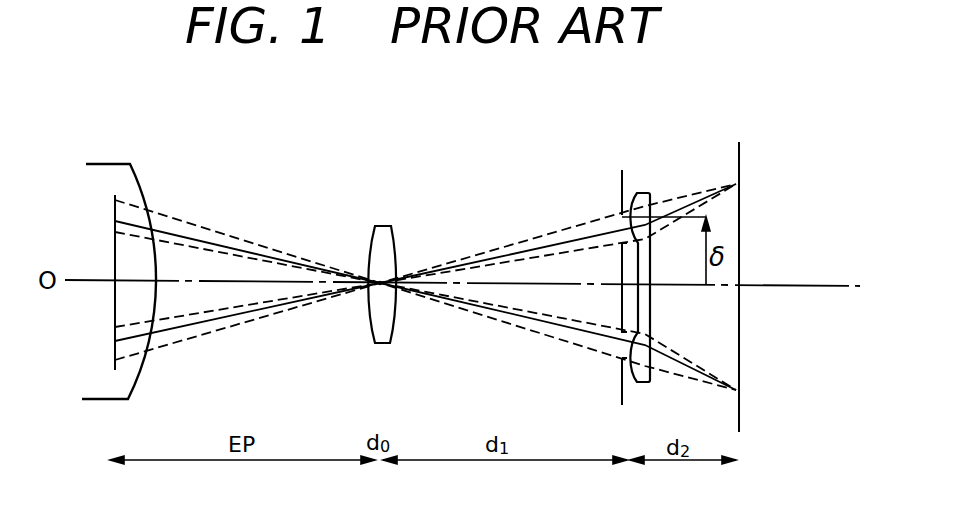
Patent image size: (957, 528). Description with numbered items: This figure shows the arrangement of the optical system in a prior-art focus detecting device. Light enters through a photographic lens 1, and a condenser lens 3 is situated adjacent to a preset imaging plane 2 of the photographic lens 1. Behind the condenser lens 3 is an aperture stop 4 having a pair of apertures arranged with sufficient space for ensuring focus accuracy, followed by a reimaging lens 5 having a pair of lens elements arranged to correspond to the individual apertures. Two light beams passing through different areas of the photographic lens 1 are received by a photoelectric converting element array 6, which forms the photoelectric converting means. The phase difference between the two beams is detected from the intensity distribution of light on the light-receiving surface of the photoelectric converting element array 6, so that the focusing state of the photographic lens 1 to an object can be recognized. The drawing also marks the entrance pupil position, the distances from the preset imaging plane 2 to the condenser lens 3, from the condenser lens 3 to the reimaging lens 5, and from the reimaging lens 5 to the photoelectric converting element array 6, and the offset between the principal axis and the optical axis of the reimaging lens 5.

The photographic lens 1 is at (105, 164).
The preset imaging plane 2 is at (381, 284).
The condenser lens 3 is at (380, 226).
The aperture stop 4 is at (622, 182).
The reimaging lens 5 is at (648, 193).
The photoelectric converting element array 6 is at (740, 206).